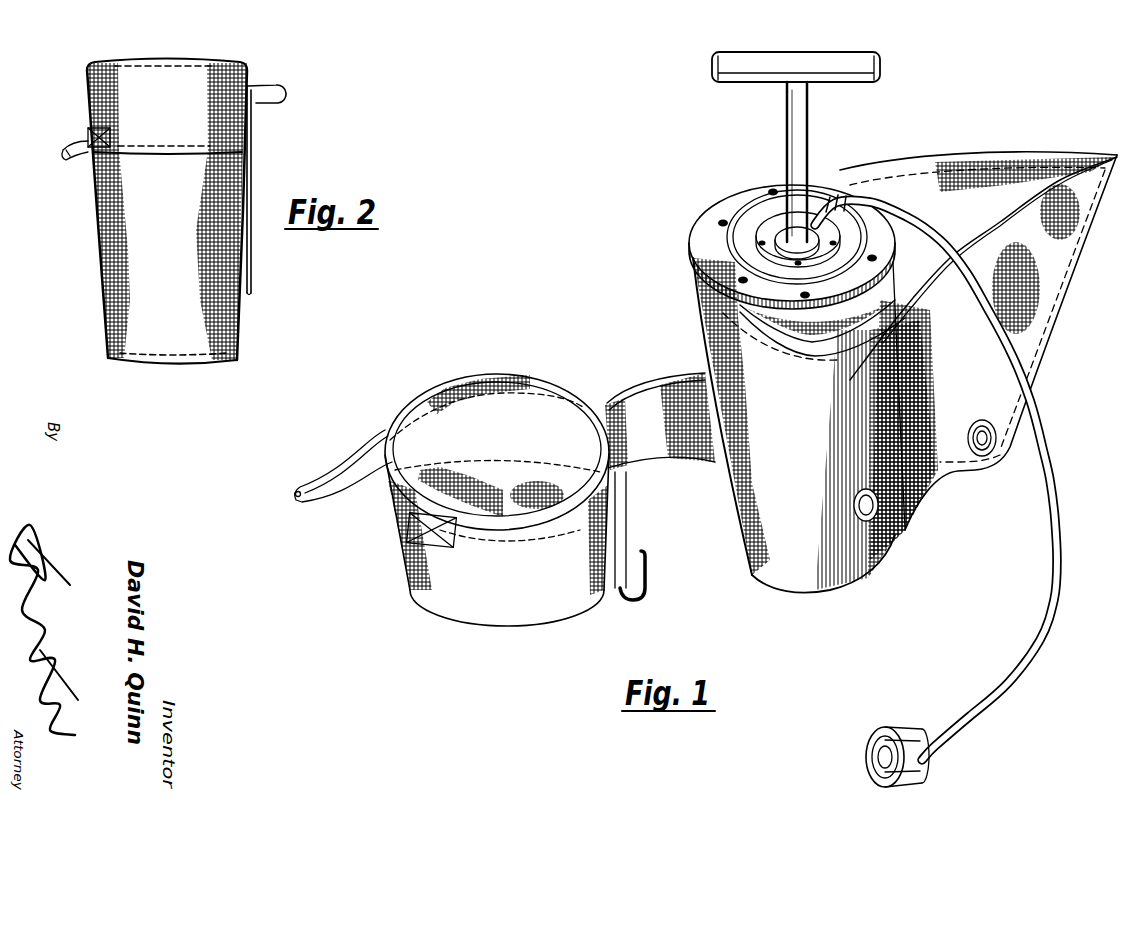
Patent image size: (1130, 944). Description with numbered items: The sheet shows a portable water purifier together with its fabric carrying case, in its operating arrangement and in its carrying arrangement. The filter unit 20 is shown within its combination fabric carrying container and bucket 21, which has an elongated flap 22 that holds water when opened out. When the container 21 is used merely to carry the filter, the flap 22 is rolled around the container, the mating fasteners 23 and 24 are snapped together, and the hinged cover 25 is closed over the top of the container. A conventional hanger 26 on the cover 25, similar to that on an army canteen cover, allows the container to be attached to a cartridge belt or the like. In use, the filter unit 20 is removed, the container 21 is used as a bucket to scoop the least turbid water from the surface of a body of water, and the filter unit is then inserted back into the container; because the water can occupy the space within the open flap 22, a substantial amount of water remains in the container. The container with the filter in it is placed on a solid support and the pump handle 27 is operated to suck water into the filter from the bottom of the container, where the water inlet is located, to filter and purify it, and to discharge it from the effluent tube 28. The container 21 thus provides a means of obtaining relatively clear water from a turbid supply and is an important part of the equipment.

In FIG. 1, the filter unit 20 is at (724, 222).
In FIG. 2, the combination fabric carrying container and bucket 21 is at (92, 278).
In FIG. 1, the combination fabric carrying container and bucket 21 is at (697, 337).
In FIG. 1, the elongated flap 22 is at (1010, 160).
In FIG. 1, the mating fastener 23 is at (905, 528).
In FIG. 1, the mating fastener 24 is at (984, 462).
In FIG. 2, the hinged cover 25 is at (162, 58).
In FIG. 1, the hinged cover 25 is at (508, 620).
In FIG. 2, the hanger 26 is at (283, 101).
In FIG. 1, the hanger 26 is at (643, 603).
In FIG. 1, the pump handle 27 is at (830, 52).
In FIG. 1, the effluent tube 28 is at (1043, 622).